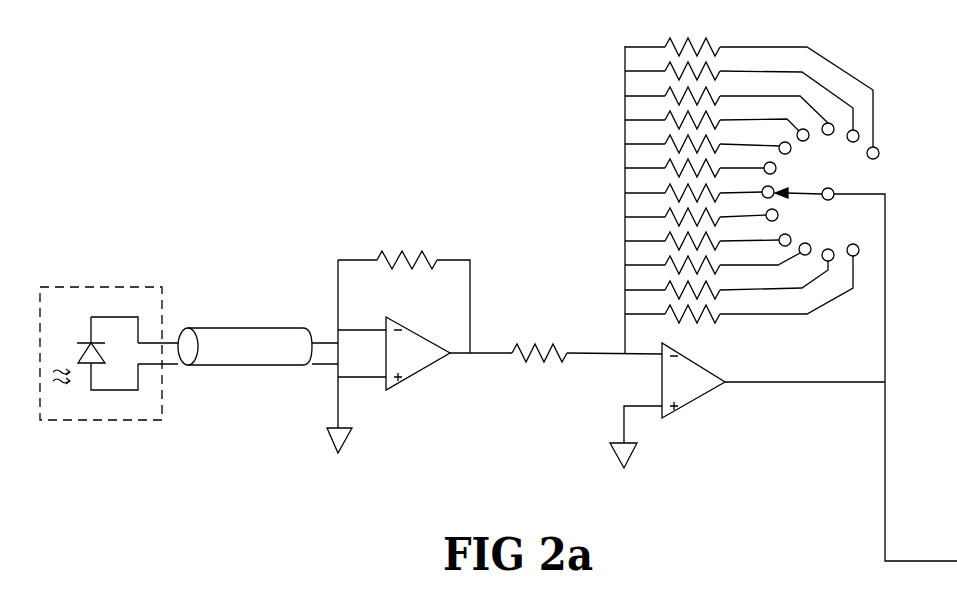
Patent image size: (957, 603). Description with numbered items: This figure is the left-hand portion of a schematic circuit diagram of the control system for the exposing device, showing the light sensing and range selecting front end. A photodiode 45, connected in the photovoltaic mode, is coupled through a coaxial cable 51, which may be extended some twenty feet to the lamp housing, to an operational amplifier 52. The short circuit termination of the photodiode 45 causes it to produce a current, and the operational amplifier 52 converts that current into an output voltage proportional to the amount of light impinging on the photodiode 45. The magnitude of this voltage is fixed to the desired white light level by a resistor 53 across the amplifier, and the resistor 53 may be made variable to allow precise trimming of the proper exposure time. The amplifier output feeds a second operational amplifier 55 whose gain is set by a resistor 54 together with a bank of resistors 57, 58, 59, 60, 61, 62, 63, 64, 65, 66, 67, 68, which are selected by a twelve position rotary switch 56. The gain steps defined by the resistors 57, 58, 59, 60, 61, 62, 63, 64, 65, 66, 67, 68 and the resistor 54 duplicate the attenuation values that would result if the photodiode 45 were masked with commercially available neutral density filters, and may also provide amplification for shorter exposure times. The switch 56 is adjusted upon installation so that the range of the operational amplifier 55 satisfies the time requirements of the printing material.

The photodiode 45 is at (83, 341).
The coaxial cable 51 is at (207, 328).
The operational amplifier 52 is at (417, 373).
The resistor 53 is at (388, 252).
The gain setting resistor 54 is at (540, 364).
The operational amplifier 55 is at (692, 402).
The twelve position rotary switch 56 is at (833, 189).
The gain setting resistor 57 is at (668, 311).
The gain setting resistor 58 is at (668, 287).
The gain setting resistor 59 is at (668, 262).
The gain setting resistor 60 is at (668, 238).
The gain setting resistor 61 is at (668, 214).
The gain setting resistor 62 is at (668, 190).
The gain setting resistor 63 is at (668, 165).
The gain setting resistor 64 is at (668, 141).
The gain setting resistor 65 is at (668, 117).
The gain setting resistor 66 is at (668, 93).
The gain setting resistor 67 is at (668, 68).
The gain setting resistor 68 is at (668, 44).